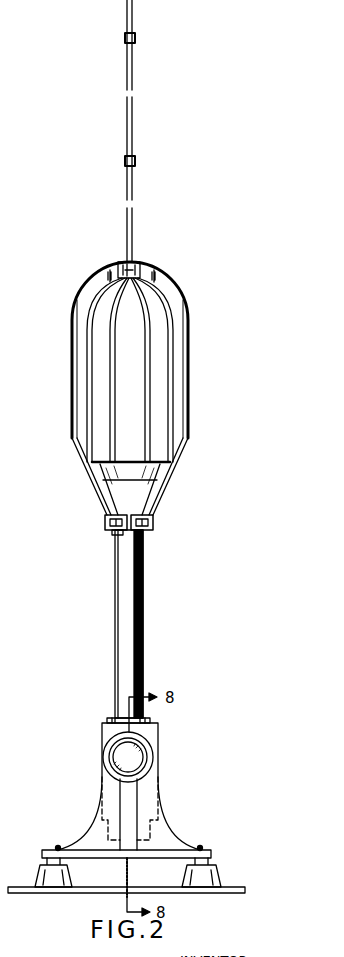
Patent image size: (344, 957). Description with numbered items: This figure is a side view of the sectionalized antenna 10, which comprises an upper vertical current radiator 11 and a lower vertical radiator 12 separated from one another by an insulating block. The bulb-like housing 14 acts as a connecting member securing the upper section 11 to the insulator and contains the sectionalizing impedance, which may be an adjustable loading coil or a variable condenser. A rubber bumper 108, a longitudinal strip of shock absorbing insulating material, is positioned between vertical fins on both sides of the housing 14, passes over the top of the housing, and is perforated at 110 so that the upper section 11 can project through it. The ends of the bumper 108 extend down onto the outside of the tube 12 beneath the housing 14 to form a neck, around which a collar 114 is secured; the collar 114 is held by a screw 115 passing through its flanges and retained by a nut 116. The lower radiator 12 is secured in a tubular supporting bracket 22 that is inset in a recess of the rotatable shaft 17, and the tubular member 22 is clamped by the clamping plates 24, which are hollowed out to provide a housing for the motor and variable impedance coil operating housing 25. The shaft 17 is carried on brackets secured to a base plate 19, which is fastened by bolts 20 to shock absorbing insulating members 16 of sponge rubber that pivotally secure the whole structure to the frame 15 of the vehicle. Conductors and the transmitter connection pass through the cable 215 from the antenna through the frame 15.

The sectionalized antenna 10 is at (142, 258).
The upper vertical current radiator 11 is at (132, 68).
The perforation 110 is at (142, 267).
The rubber bumper 108 is at (188, 312).
The bulb-like housing 14 is at (156, 356).
The collar 114 is at (106, 522).
The screw 115 is at (154, 522).
The nut 116 is at (117, 534).
The lower vertical radiator 12 is at (143, 578).
The tubular supporting bracket 22 is at (150, 720).
The clamping plates 24 is at (152, 734).
The shaft 17 is at (135, 761).
The motor and variable impedance coil operating housing 25 is at (150, 836).
The bolts 20 is at (56, 847).
The base plate 19 is at (212, 855).
The shock absorbing insulating members 16 is at (42, 870).
The frame 15 is at (240, 889).
The cable 215 is at (130, 873).